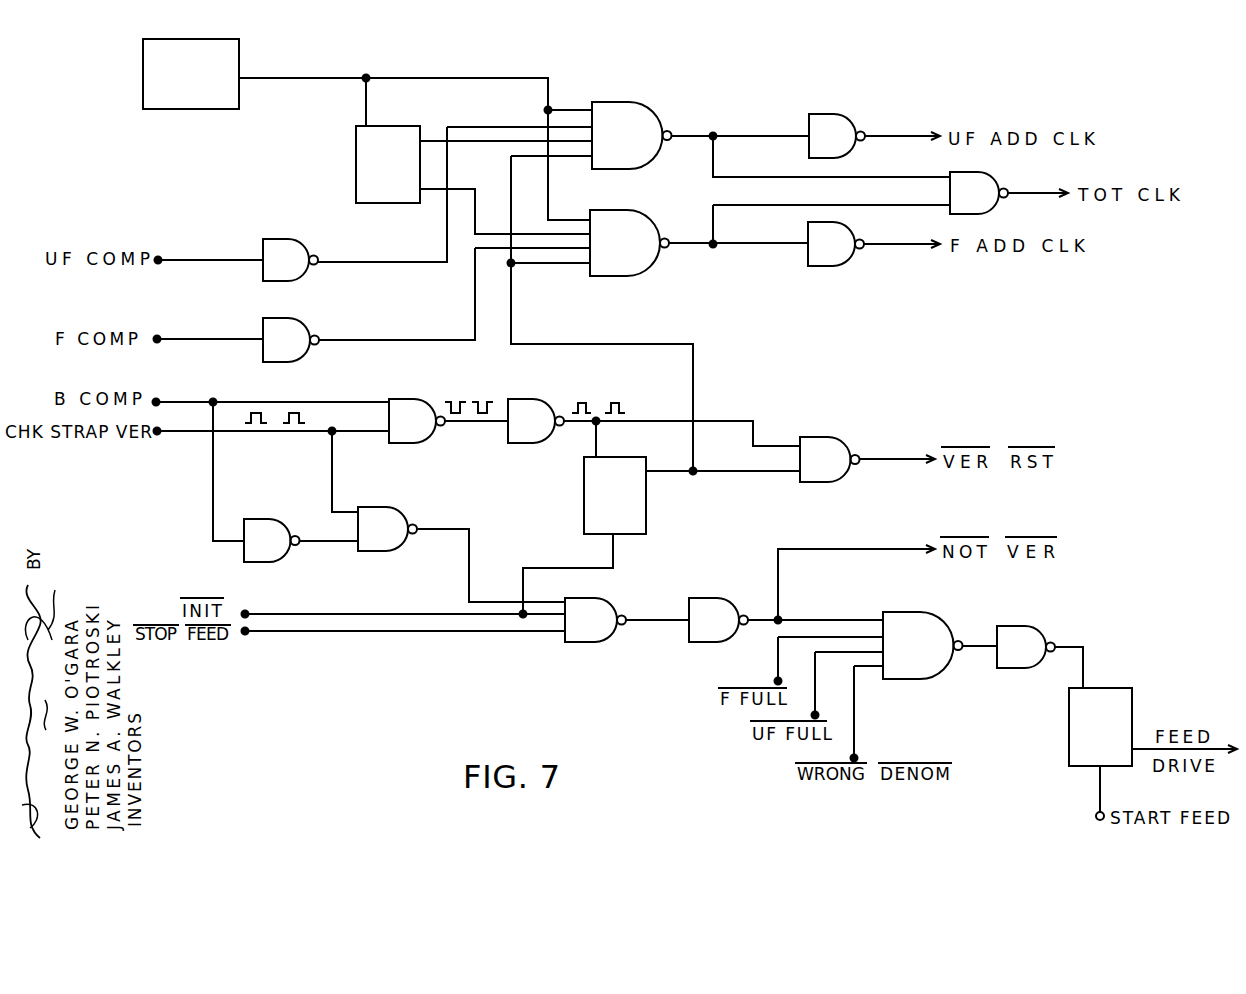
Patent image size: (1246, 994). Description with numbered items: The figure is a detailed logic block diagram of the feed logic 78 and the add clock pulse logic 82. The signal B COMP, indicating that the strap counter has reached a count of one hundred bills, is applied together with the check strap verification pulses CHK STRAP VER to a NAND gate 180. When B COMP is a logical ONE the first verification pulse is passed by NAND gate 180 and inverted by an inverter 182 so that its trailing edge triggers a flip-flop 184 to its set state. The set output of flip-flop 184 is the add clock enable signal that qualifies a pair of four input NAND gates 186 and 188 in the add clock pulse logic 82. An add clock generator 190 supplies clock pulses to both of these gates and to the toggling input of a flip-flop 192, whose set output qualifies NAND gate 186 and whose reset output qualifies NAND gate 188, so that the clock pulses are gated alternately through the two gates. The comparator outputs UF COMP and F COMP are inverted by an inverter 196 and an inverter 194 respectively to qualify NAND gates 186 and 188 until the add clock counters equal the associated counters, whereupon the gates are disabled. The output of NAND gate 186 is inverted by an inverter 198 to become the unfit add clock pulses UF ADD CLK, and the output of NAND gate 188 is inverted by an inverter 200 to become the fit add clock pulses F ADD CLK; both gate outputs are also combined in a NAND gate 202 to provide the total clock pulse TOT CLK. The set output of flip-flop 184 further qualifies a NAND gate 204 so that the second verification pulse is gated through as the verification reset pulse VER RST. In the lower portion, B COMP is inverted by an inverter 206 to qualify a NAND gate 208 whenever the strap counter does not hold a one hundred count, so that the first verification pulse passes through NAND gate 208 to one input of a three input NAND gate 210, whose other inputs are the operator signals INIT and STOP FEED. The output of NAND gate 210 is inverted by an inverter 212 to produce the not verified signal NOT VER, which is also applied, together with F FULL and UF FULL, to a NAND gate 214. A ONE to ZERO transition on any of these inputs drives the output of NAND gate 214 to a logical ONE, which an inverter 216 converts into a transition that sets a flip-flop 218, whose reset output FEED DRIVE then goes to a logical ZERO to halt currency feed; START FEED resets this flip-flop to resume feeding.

The feed logic 78 is at (771, 404).
The add clock pulse logic 82 is at (635, 91).
The NAND gate 180 is at (408, 402).
The inverter 182 is at (527, 403).
The flip-flop 184 is at (645, 521).
The four input NAND gate 186 is at (653, 118).
The four input NAND gate 188 is at (642, 263).
The add clock generator 190 is at (235, 53).
The flip-flop 192 is at (356, 138).
The inverter 194 is at (287, 323).
The inverter 196 is at (275, 242).
The inverter 198 is at (828, 120).
The inverter 200 is at (843, 257).
The NAND gate 202 is at (982, 180).
The NAND gate 204 is at (832, 443).
The inverter 206 is at (260, 523).
The NAND gate 208 is at (390, 510).
The three input NAND gate 210 is at (587, 635).
The inverter 212 is at (717, 603).
The NAND gate 214 is at (923, 618).
The inverter 216 is at (1027, 630).
The flip-flop 218 is at (1113, 692).